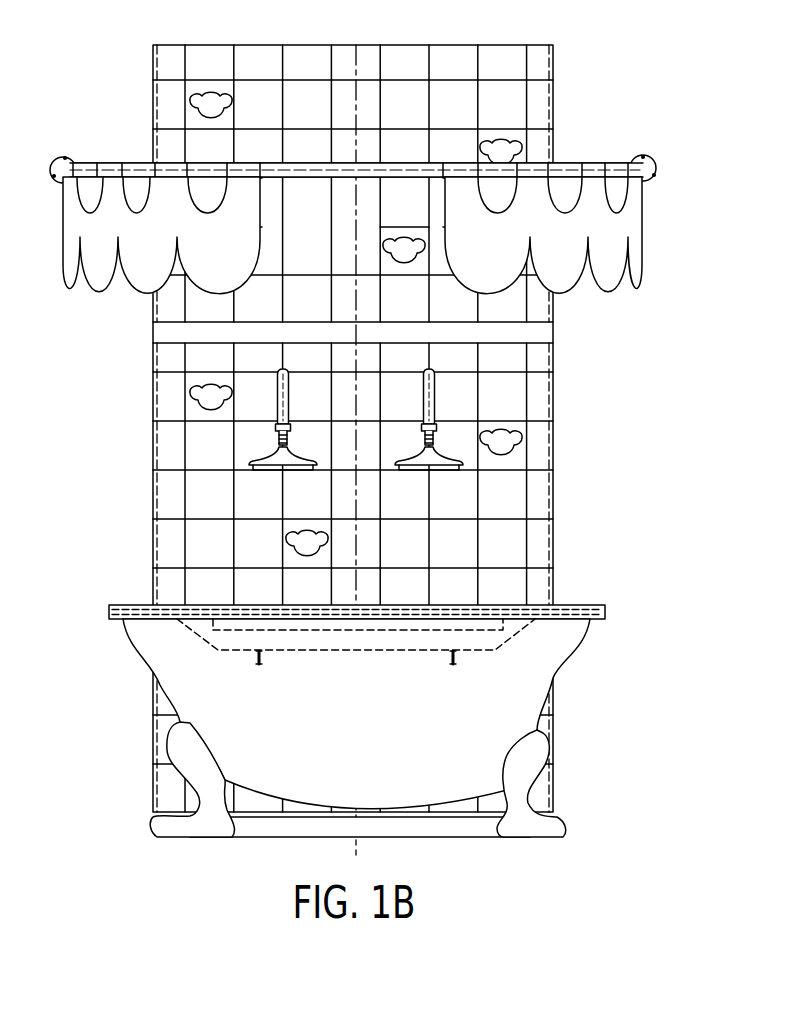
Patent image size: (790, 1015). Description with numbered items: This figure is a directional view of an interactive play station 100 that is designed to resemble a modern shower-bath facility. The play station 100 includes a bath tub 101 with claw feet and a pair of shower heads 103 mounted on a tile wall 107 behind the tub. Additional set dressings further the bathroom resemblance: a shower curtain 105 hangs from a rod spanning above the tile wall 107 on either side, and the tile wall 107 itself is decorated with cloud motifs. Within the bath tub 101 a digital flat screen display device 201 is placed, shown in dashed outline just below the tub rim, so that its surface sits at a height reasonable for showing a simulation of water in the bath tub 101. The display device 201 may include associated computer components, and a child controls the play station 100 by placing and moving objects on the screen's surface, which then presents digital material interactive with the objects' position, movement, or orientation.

The interactive play station 100 is at (372, 450).
The bath tub 101 is at (533, 692).
The shower heads 103 is at (278, 461).
The shower curtain 105 is at (636, 221).
The tile wall 107 is at (152, 445).
The digital flat screen display device 201 is at (503, 622).